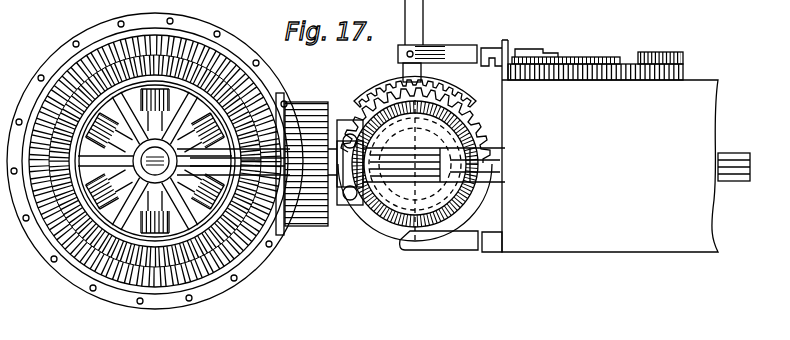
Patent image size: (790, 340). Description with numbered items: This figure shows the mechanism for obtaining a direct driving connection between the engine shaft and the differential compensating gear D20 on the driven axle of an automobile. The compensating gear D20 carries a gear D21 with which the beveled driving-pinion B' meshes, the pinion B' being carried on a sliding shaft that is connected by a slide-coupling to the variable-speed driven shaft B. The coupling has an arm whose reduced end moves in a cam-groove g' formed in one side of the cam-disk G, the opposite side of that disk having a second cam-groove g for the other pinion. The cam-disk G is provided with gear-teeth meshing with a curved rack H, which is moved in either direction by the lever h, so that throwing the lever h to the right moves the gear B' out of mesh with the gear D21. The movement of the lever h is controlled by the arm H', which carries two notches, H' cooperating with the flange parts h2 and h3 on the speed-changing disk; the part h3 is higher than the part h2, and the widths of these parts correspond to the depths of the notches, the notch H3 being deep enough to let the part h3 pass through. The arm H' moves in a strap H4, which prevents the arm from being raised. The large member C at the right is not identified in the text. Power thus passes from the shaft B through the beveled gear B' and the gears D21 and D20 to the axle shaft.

The compensating gear D20 is at (152, 284).
The gear D21 is at (78, 262).
The driven shaft B is at (465, 172).
The driving-pinion B' is at (298, 179).
The cam-disk G is at (385, 200).
The cam-groove g is at (414, 189).
The cam-groove g' is at (427, 244).
The curved rack H is at (414, 85).
The lever h is at (423, 14).
The arm H' is at (530, 42).
The strap H4 is at (505, 45).
The notch H3 is at (548, 50).
The flange h2 is at (590, 62).
The flange h3 is at (658, 56).
The cylinder C is at (596, 249).